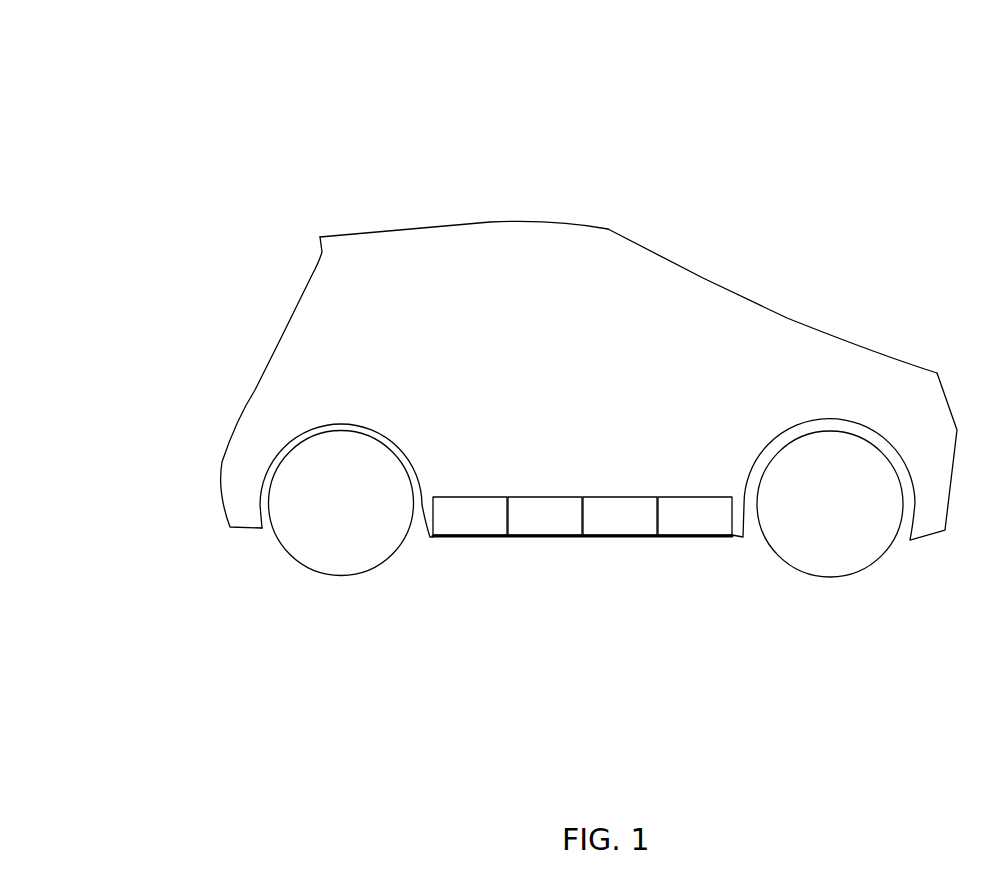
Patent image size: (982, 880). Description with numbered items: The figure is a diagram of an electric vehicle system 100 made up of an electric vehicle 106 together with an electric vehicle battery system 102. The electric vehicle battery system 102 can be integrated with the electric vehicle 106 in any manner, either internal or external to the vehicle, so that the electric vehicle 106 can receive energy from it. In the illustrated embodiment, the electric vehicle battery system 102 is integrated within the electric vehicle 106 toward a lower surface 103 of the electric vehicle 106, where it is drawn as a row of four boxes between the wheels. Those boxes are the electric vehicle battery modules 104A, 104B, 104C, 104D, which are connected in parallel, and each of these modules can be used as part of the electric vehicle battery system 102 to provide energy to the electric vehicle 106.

The electric vehicle system 100 is at (110, 80).
The electric vehicle battery system 102 is at (535, 452).
The lower surface 103 is at (735, 538).
The electric vehicle battery module 104A is at (470, 516).
The electric vehicle battery module 104B is at (545, 516).
The electric vehicle battery module 104C is at (620, 516).
The electric vehicle battery module 104D is at (695, 516).
The electric vehicle 106 is at (488, 222).